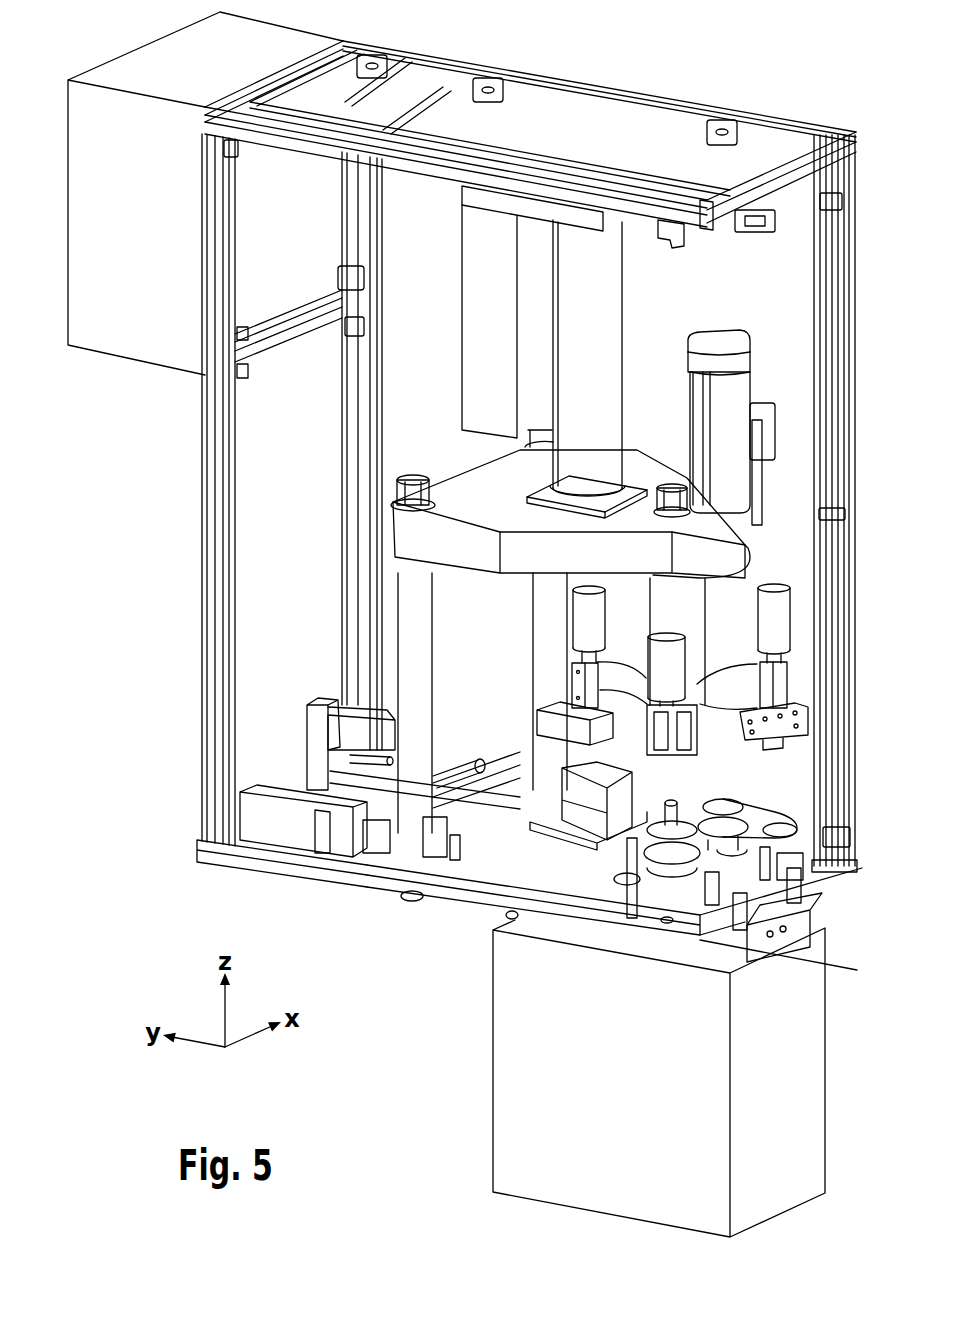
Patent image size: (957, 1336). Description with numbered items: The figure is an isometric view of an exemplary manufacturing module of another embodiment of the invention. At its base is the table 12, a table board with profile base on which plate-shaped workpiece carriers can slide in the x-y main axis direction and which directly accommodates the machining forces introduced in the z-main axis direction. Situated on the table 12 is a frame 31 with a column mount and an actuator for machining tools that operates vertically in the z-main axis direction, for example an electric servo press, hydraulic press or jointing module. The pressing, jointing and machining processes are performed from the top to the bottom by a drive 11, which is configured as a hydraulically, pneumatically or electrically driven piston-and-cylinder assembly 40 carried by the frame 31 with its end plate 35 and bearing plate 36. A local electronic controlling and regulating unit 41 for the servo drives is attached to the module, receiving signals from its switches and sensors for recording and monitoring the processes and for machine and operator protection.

The drive 11 is at (640, 289).
The table 12 is at (810, 873).
The frame 31 is at (183, 656).
The end plate 35 is at (460, 552).
The bearing plate 36 is at (477, 880).
The piston-and-cylinder assembly 40 is at (610, 382).
The controlling and regulating unit 41 is at (124, 346).